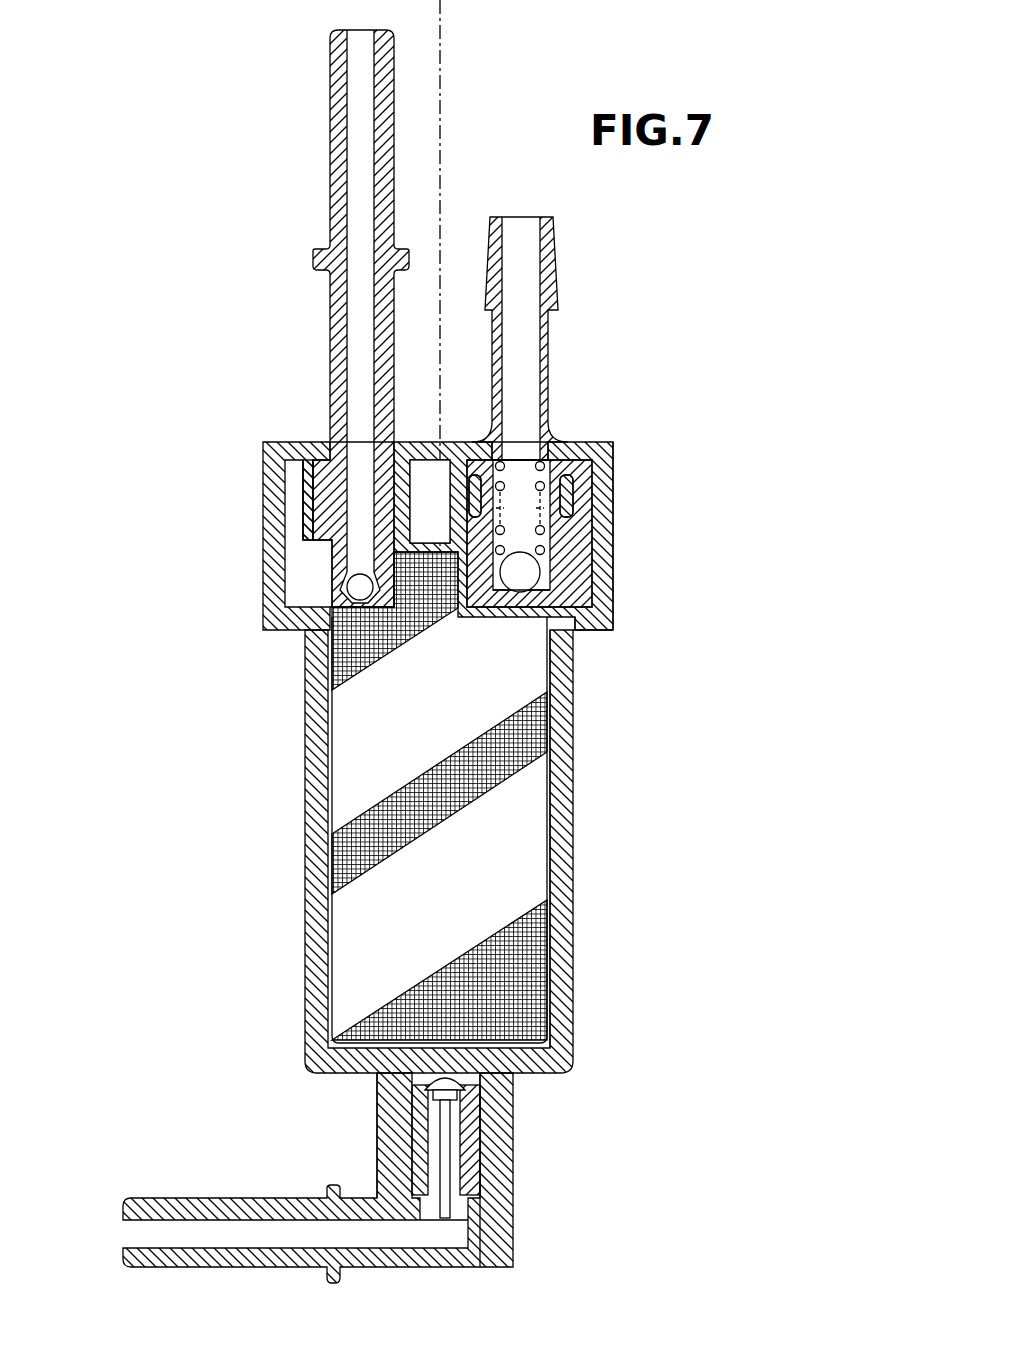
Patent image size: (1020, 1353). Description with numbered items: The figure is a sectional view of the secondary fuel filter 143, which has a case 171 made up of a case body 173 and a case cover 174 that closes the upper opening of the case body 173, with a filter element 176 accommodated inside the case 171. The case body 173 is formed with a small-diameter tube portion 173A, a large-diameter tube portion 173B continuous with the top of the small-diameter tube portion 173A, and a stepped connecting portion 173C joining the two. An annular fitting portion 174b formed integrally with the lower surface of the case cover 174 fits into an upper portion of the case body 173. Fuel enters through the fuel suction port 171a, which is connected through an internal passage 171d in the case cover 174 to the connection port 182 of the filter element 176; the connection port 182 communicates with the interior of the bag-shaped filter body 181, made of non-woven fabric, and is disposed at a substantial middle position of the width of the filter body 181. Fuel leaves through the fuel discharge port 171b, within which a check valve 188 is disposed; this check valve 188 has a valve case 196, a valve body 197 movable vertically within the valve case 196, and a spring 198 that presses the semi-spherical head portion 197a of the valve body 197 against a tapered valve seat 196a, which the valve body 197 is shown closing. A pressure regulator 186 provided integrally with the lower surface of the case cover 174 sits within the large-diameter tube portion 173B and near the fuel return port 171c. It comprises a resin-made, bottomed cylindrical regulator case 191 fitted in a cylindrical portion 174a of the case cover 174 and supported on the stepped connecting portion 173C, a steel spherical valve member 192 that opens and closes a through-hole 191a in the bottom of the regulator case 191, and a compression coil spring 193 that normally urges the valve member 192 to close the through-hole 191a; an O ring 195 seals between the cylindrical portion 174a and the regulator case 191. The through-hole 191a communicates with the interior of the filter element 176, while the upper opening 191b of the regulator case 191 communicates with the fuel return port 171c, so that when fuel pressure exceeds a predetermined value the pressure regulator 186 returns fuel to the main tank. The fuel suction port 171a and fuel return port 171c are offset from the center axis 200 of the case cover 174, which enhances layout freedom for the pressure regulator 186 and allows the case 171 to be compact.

The secondary fuel filter 143 is at (168, 187).
The case 171 is at (398, 656).
The fuel suction port 171a is at (340, 95).
The fuel discharge port 171b is at (195, 1208).
The fuel return port 171c is at (553, 272).
The internal passage 171d is at (305, 475).
The case body 173 is at (516, 755).
The small-diameter tube portion 173A is at (565, 778).
The large-diameter tube portion 173B is at (605, 485).
The stepped connecting portion 173C is at (585, 640).
The case cover 174 is at (399, 463).
The cylindrical portion 174a is at (425, 477).
The annular fitting portion 174b is at (224, 500).
The filter element 176 is at (332, 772).
The filter body 181 is at (540, 832).
The connection port 182 is at (320, 545).
The pressure regulator 186 is at (592, 606).
The check valve 188 is at (405, 1133).
The regulator case 191 is at (627, 554).
The through-hole 191a is at (520, 610).
The upper opening 191b is at (548, 438).
The valve member 192 is at (530, 575).
The compression coil spring 193 is at (478, 492).
The O ring 195 is at (570, 495).
The valve case 196 is at (475, 1167).
The tapered valve seat 196a is at (435, 1092).
The valve body 197 is at (475, 1140).
The semi-spherical head portion 197a is at (462, 1082).
The spring 198 is at (482, 1217).
The center axis 200 is at (440, 27).